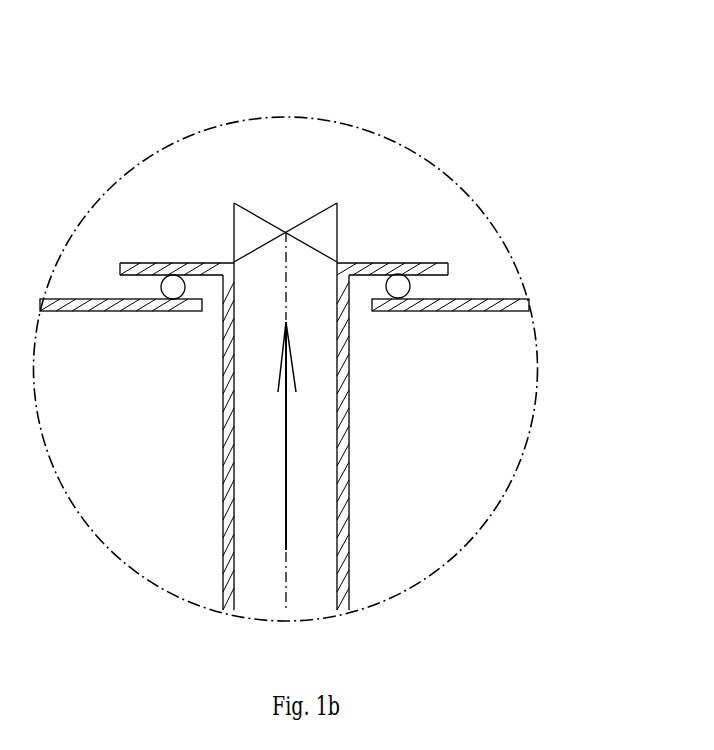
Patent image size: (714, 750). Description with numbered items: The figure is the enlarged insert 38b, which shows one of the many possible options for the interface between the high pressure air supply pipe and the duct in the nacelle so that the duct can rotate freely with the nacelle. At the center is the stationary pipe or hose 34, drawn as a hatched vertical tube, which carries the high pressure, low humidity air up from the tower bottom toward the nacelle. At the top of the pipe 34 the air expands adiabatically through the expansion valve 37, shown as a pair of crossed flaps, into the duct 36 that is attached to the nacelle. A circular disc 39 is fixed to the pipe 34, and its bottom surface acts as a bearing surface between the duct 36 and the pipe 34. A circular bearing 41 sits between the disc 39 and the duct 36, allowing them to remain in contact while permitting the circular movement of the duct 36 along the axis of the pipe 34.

The insert 38b is at (361, 130).
The expansion valve 37 is at (337, 203).
The circular disc 39 is at (403, 262).
The duct 36 is at (502, 298).
The circular bearing 41 is at (175, 286).
The pipe or hose 34 is at (349, 512).